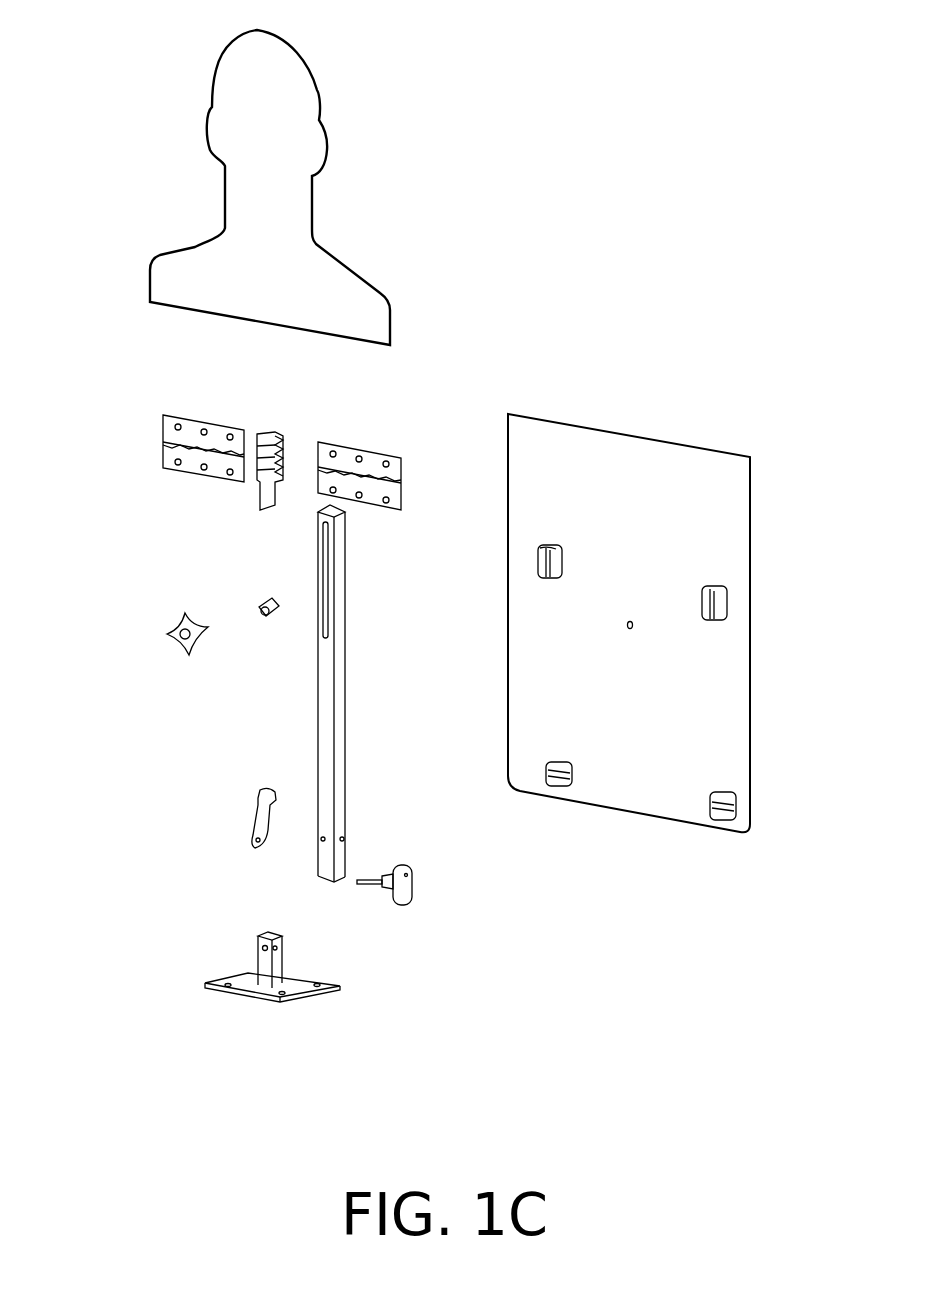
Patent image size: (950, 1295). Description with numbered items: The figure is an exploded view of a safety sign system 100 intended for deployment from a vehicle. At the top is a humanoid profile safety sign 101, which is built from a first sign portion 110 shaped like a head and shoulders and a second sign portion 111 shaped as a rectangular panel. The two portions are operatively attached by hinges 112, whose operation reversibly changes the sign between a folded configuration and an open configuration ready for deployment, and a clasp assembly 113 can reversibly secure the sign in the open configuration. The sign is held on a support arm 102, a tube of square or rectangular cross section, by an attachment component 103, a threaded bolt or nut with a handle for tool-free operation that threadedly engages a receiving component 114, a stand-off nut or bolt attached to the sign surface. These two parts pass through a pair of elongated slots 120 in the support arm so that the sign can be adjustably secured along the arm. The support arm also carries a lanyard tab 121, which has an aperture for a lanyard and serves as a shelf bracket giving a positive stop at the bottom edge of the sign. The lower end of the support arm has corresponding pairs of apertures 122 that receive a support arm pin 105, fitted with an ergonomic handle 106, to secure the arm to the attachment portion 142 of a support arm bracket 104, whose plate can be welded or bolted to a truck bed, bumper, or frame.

The safety sign system 100 is at (70, 31).
The humanoid profile safety sign 101 is at (555, 410).
The support arm 102 is at (347, 688).
The attachment component 103 is at (170, 633).
The support arm bracket 104 is at (225, 992).
The support arm pin 105 is at (377, 887).
The ergonomic handle 106 is at (407, 875).
The first sign portion 110 is at (337, 268).
The second sign portion 111 is at (750, 551).
The hinges 112 is at (347, 443).
The clasp assembly 113 is at (260, 493).
The receiving component 114 is at (260, 610).
The elongated slots 120 is at (325, 583).
The lanyard tab 121 is at (262, 820).
The apertures 122 is at (345, 838).
The attachment portion 142 is at (258, 957).